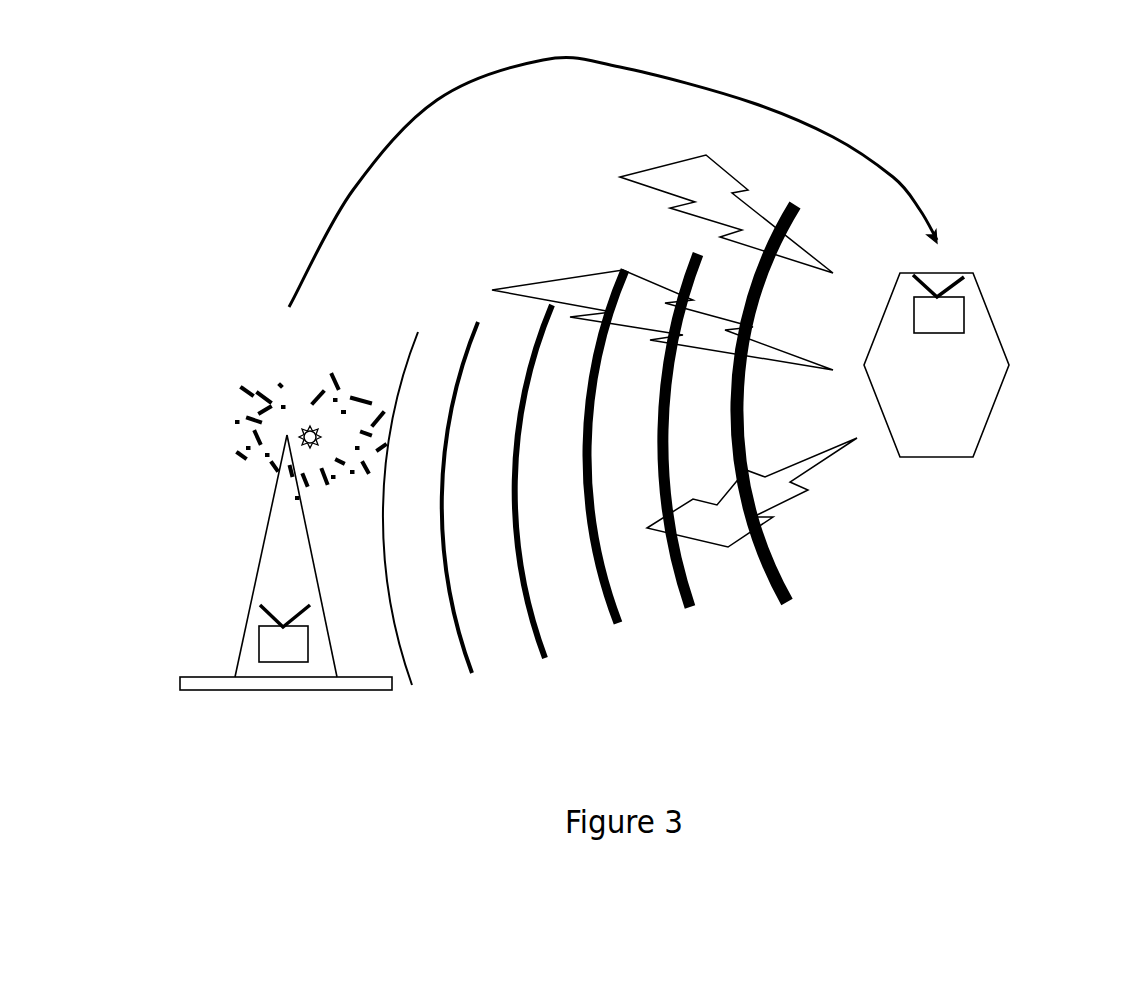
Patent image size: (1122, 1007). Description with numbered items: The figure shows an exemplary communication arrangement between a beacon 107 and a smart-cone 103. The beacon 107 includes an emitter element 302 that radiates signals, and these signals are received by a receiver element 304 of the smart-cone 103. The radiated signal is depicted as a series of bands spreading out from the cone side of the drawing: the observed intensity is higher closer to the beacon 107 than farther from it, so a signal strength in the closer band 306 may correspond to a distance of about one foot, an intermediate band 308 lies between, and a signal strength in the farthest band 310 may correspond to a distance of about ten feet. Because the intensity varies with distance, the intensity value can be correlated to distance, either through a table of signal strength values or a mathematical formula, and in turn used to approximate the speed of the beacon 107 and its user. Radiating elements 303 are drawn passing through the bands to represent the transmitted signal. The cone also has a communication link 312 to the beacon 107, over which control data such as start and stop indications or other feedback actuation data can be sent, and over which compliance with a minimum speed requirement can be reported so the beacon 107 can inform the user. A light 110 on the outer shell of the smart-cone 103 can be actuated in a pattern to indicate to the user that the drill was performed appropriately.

The smart-cone 103 is at (261, 562).
The receiver element 304 is at (220, 618).
The light 110 is at (284, 416).
The farthest band 310 is at (504, 504).
The radio wave 308 is at (725, 486).
The closer band 306 is at (839, 421).
The interference signal 303 is at (674, 351).
The communication link 312 is at (613, 182).
The beacon 107 is at (988, 365).
The emitter element 302 is at (993, 299).